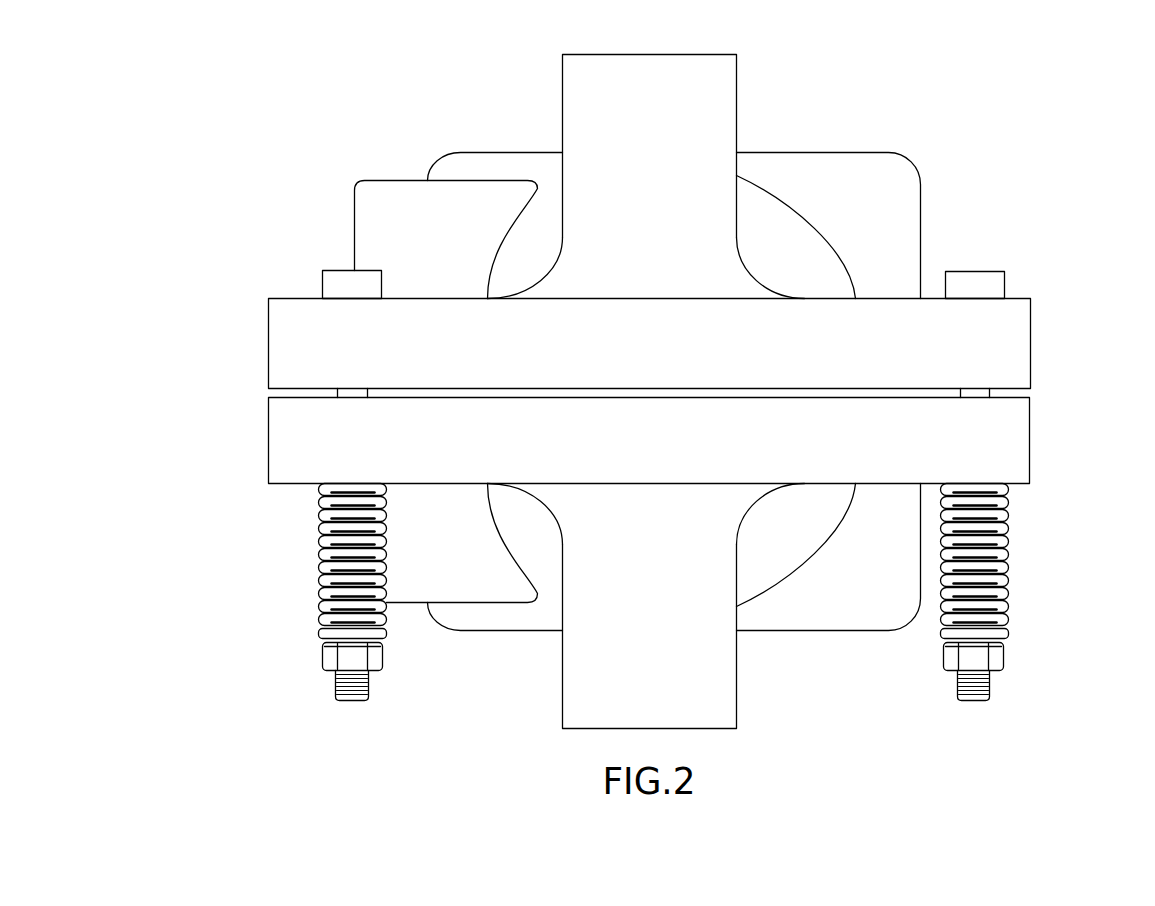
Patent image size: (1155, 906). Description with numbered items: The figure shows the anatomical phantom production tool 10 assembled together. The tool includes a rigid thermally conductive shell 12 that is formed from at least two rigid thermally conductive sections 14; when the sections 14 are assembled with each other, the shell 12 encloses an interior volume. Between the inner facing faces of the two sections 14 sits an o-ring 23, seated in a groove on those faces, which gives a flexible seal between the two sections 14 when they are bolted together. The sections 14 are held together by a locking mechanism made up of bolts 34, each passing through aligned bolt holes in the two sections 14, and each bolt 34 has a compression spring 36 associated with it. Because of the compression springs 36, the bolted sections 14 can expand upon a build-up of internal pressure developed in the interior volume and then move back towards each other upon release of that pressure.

The anatomical phantom production tool 10 is at (1042, 93).
The rigid thermally conductive shell 12 is at (660, 391).
The rigid thermally conductive section 14 is at (288, 342).
The o-ring 23 is at (340, 390).
The bolt 34 is at (341, 270).
The compression spring 36 is at (325, 562).